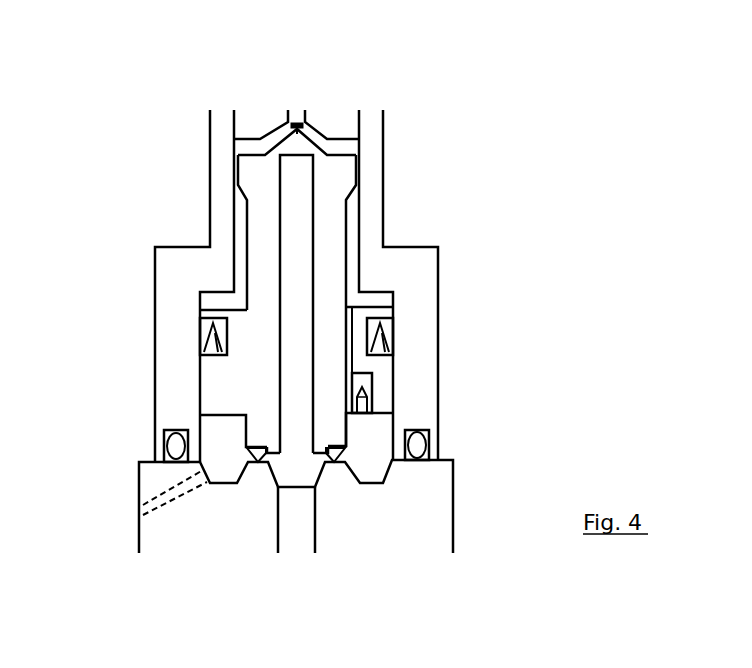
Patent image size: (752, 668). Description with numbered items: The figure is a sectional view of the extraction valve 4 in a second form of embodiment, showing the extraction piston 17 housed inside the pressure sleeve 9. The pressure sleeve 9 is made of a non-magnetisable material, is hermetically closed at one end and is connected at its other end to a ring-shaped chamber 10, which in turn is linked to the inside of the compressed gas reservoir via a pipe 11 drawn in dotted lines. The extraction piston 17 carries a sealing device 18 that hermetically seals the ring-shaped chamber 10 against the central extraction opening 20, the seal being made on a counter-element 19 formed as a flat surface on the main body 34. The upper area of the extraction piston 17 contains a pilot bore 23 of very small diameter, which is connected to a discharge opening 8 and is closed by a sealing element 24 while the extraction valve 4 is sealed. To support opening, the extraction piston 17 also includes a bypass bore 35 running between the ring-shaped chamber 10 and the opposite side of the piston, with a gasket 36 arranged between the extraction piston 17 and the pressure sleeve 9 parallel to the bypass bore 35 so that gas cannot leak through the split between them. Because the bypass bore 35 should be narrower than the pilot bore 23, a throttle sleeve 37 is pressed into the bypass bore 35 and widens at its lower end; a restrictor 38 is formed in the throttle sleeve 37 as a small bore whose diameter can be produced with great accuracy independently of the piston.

The extraction valve 4 is at (90, 144).
The discharge opening 8 is at (292, 202).
The pressure sleeve 9 is at (173, 275).
The ring-shaped chamber 10 is at (220, 447).
The pipe 11 is at (140, 508).
The extraction piston 17 is at (338, 242).
The sealing device 18 is at (345, 448).
The counter-element 19 is at (333, 462).
The central extraction opening 20 is at (300, 532).
The pilot bore 23 is at (312, 127).
The sealing element 24 is at (298, 114).
The main body 34 is at (228, 535).
The bypass bore 35 is at (353, 340).
The gasket 36 is at (203, 326).
The throttle sleeve 37 is at (367, 403).
The restrictor 38 is at (372, 378).